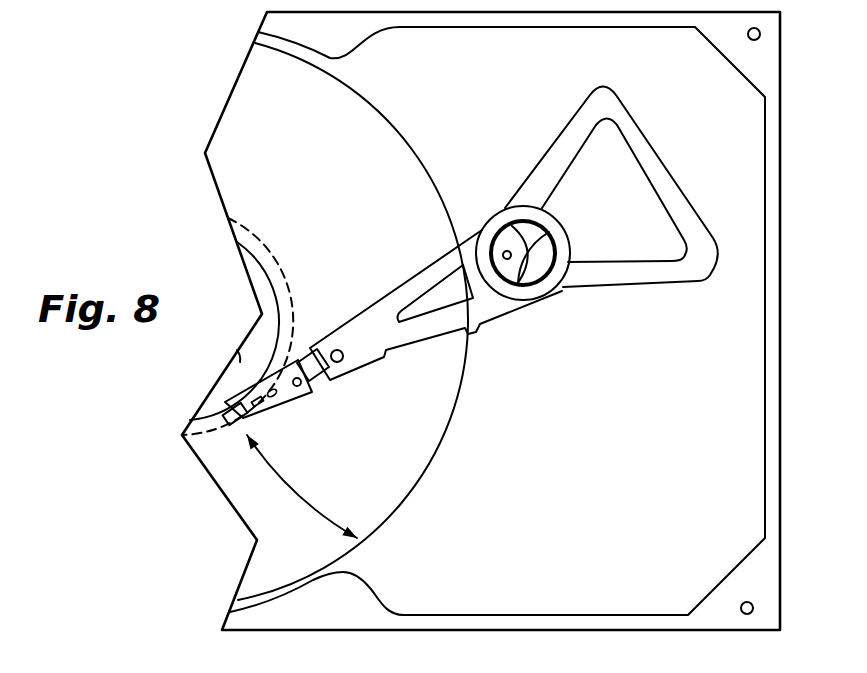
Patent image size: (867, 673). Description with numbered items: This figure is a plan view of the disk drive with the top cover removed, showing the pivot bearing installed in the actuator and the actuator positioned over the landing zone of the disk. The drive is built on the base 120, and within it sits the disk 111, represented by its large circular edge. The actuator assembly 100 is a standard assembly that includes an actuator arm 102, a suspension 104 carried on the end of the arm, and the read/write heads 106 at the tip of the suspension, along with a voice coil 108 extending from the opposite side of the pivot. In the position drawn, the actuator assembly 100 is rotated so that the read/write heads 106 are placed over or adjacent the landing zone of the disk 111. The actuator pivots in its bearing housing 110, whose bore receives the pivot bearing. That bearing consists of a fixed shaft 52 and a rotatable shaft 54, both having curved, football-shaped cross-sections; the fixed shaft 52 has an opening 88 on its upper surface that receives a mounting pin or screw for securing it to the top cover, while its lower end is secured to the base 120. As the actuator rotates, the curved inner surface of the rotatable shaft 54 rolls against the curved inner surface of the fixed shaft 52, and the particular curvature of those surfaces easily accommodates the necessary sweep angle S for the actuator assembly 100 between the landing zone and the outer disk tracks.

The base 120 is at (406, 85).
The disk 111 is at (336, 170).
The actuator assembly 100 is at (430, 295).
The actuator arm 102 is at (358, 338).
The suspension 104 is at (287, 392).
The read/write heads 106 is at (236, 420).
The voice coil 108 is at (556, 162).
The bearing housing 110 is at (505, 251).
The opening 88 is at (499, 234).
The fixed shaft 52 is at (510, 268).
The rotatable shaft 54 is at (548, 255).
The sweep angle S is at (290, 485).